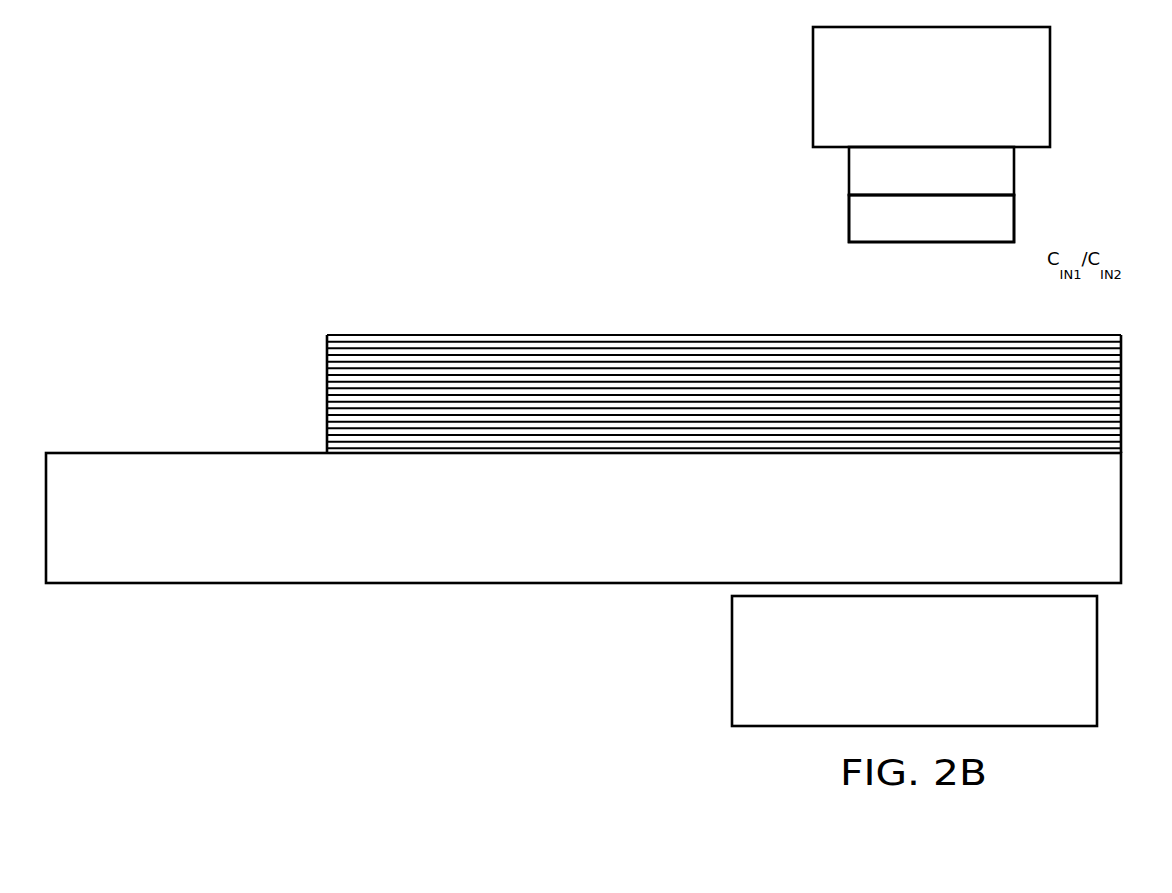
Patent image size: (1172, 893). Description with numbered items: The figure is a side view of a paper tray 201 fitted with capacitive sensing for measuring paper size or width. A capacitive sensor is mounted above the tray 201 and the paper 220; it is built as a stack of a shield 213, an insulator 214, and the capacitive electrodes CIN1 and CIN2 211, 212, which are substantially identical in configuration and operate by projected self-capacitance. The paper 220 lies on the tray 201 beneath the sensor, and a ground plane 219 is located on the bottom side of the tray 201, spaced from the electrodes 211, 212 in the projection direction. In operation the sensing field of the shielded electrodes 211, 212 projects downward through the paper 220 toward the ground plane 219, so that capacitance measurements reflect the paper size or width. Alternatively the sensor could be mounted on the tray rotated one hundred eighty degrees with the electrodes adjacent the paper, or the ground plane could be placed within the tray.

The paper tray 201 is at (561, 552).
The capacitive electrode CIN1 211 is at (1005, 220).
The capacitive electrode CIN2 212 is at (997, 221).
The shield 213 is at (910, 120).
The insulator 214 is at (1005, 174).
The ground plane 219 is at (936, 695).
The paper 220 is at (725, 334).